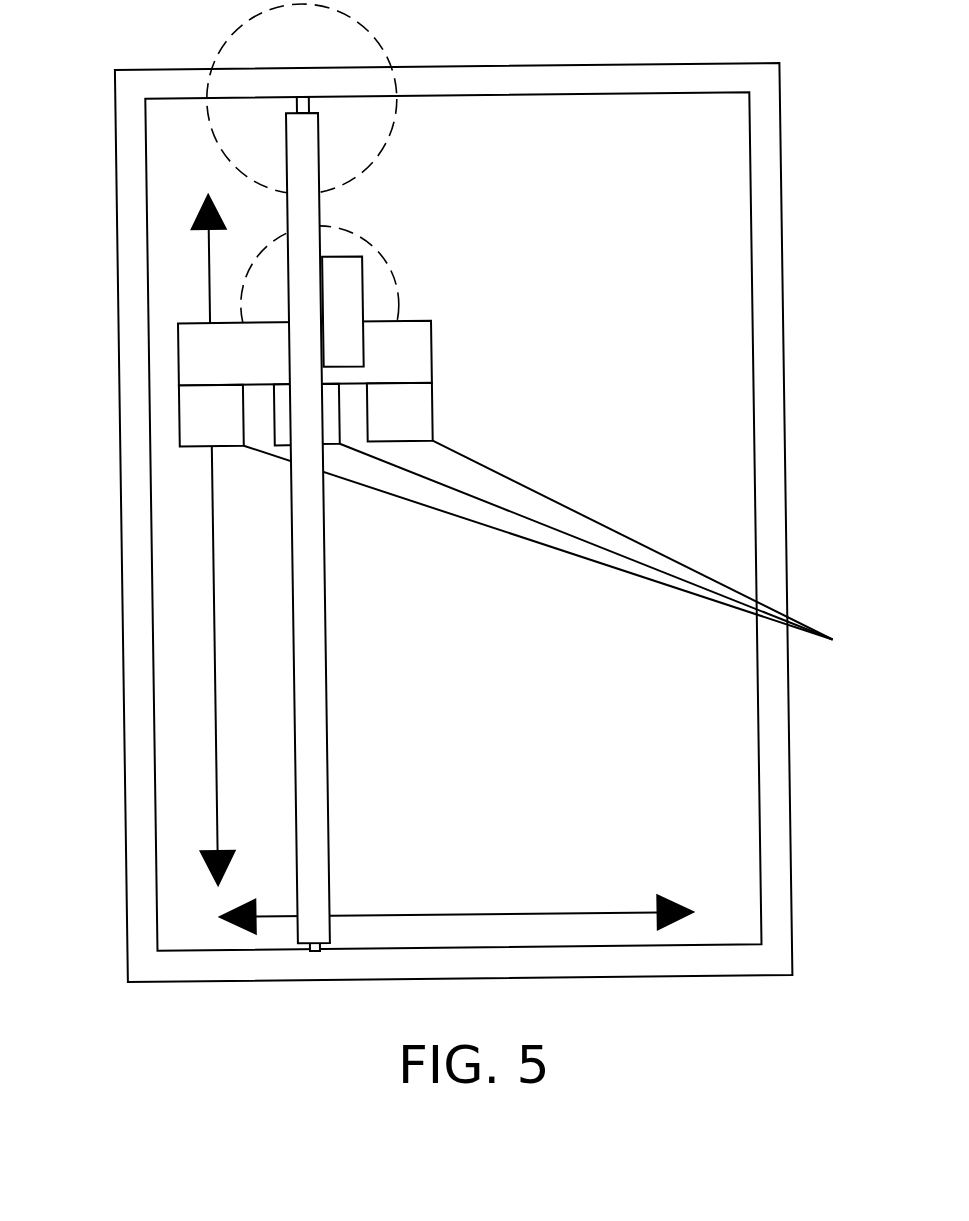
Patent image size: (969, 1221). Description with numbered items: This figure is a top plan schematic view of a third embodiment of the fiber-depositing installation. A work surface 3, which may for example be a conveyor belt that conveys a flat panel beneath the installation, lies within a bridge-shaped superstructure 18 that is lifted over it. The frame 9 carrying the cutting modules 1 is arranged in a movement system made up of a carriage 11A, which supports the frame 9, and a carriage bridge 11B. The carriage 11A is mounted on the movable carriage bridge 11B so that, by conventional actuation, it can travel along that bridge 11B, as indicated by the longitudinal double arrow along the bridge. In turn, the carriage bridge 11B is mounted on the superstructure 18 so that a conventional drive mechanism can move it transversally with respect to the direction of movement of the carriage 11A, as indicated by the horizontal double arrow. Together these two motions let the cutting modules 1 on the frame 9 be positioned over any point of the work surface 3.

The cutting modules 1 is at (552, 547).
The work surface 3 is at (657, 787).
The frame 9 is at (431, 347).
The carriage 11A is at (337, 321).
The carriage bridge 11B is at (312, 540).
The bridge-shaped superstructure 18 is at (126, 852).